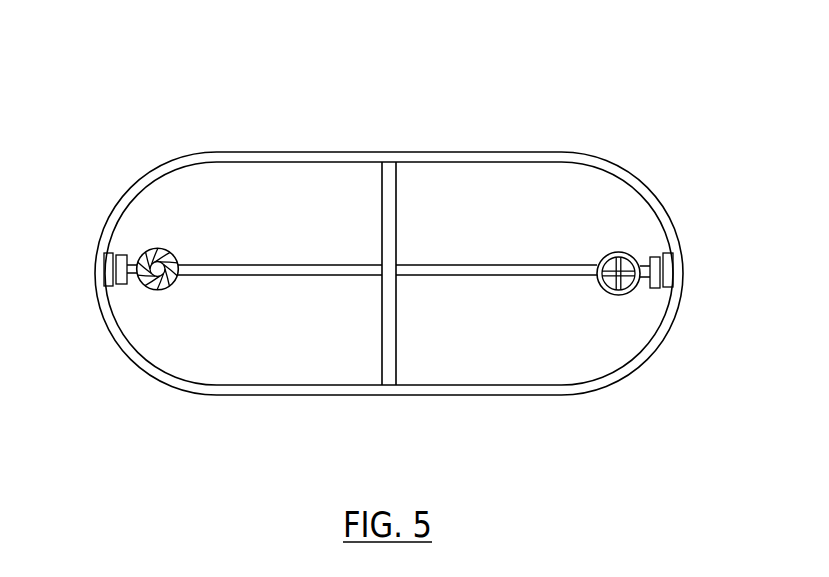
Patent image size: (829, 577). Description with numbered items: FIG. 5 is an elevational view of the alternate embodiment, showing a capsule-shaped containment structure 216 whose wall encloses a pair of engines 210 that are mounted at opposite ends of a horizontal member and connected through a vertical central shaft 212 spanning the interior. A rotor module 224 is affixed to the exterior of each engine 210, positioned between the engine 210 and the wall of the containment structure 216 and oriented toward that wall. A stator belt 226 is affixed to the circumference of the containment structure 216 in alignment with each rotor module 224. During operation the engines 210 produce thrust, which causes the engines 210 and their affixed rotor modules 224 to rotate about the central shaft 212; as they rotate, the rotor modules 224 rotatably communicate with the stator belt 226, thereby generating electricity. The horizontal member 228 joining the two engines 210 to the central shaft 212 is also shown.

The engine 210 is at (147, 292).
The central shaft 212 is at (380, 211).
The containment structure 216 is at (502, 153).
The rotor module 224 is at (122, 252).
The stator belt 226 is at (110, 289).
The shaft 228 is at (463, 279).